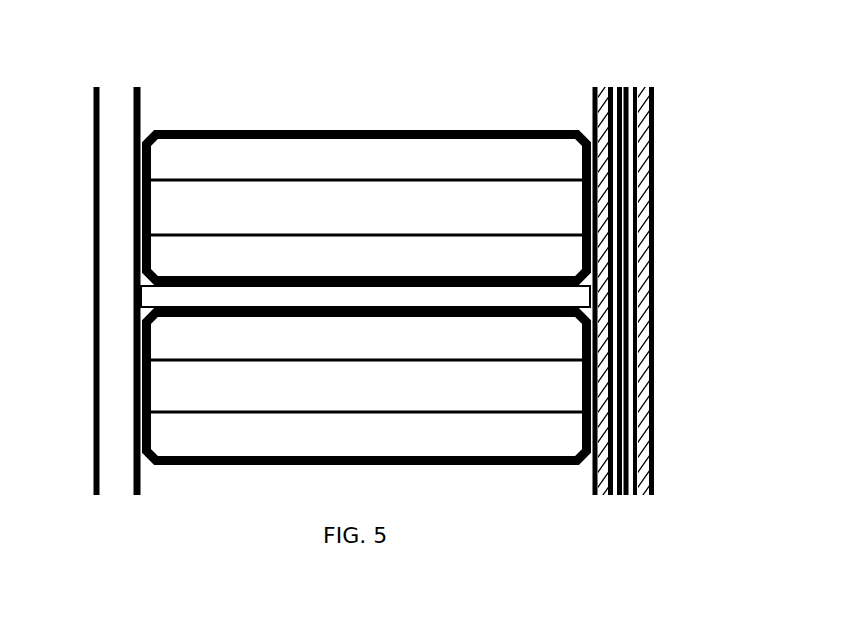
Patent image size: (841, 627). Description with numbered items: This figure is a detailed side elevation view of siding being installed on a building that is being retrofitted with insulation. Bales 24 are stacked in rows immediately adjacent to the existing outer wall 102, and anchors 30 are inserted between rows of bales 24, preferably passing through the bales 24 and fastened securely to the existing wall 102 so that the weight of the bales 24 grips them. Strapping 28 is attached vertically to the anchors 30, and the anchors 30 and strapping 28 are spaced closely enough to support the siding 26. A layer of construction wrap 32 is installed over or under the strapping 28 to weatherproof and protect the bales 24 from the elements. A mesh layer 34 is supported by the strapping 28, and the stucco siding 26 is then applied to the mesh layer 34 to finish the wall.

The outer wall 102 is at (117, 143).
The bales 24 is at (143, 198).
The anchors 30 is at (423, 298).
The strapping 28 is at (592, 102).
The construction wrap 32 is at (619, 87).
The mesh layer 34 is at (628, 87).
The siding 26 is at (653, 405).